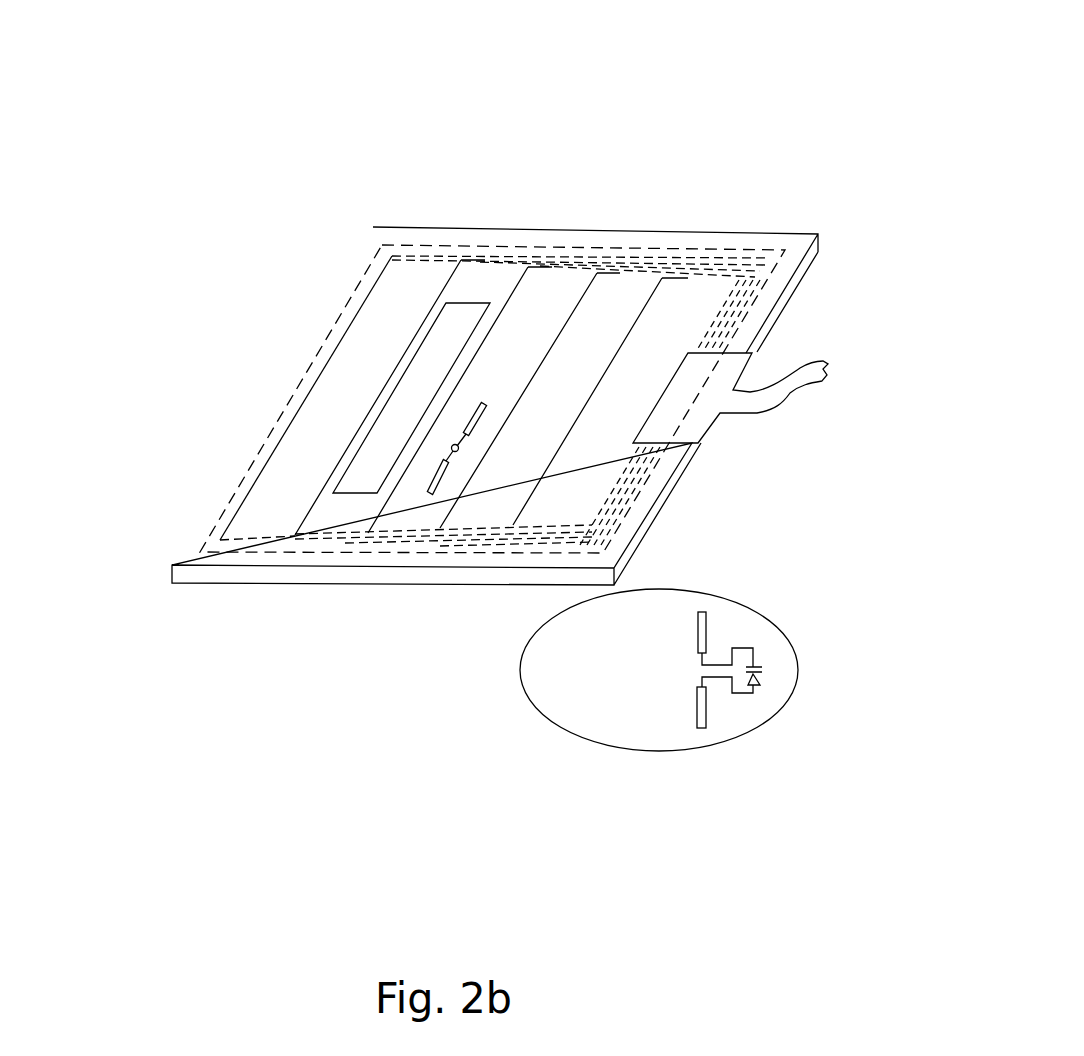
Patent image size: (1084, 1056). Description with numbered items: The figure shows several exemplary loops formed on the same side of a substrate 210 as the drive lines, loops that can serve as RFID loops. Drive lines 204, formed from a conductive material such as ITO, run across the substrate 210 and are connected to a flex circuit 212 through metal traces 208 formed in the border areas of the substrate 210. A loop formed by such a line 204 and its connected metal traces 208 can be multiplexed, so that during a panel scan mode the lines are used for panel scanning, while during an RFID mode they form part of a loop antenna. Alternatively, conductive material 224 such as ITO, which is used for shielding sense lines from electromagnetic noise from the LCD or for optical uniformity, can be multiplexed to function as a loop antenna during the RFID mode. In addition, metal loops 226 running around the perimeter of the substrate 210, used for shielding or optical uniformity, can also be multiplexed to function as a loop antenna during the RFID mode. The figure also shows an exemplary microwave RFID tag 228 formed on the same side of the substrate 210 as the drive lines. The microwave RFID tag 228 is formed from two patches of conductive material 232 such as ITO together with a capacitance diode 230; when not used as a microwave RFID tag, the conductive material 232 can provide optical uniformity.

The drive lines 204 is at (613, 360).
The metal traces 208 is at (308, 622).
The substrate 210 is at (192, 585).
The flex circuit 212 is at (790, 396).
The conductive material 224 is at (475, 303).
The metal loops 226 is at (280, 420).
The microwave RFID tag 228 is at (447, 470).
The capacitance diode 230 is at (764, 667).
The conductive material 232 is at (742, 765).